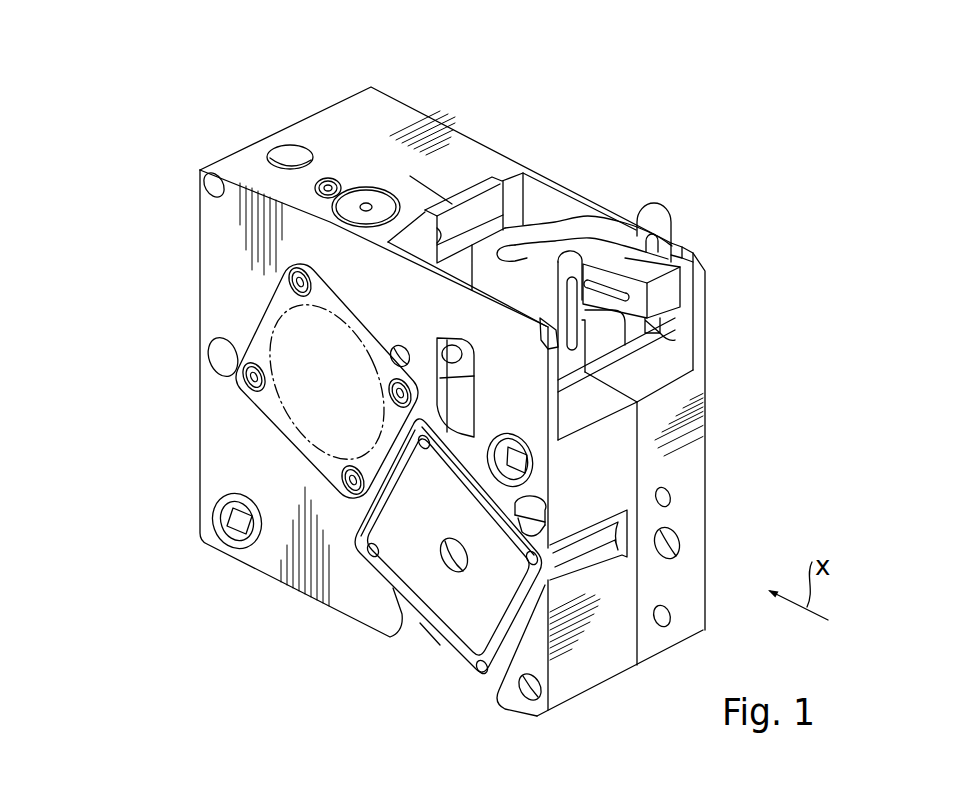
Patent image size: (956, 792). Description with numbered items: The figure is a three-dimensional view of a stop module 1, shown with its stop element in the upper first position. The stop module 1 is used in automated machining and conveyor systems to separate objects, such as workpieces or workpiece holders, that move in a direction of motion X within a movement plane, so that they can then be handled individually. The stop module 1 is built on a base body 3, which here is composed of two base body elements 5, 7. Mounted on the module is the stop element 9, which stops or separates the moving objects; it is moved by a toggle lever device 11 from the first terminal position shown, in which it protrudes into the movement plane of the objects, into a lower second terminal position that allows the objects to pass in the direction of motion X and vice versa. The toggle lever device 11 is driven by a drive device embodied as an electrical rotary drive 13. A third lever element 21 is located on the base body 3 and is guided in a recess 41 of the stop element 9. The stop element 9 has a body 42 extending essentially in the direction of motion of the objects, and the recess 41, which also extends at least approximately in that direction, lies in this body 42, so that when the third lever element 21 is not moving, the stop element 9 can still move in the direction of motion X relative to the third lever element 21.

The stop module 1 is at (107, 80).
The base body 3 is at (337, 100).
The base body element 5 is at (393, 110).
The base body element 7 is at (248, 160).
The stop element 9 is at (625, 215).
The toggle lever device 11 is at (450, 385).
The electrical rotary drive 13 is at (473, 627).
The third lever element 21 is at (680, 220).
The recess 41 is at (504, 232).
The body 42 is at (595, 214).